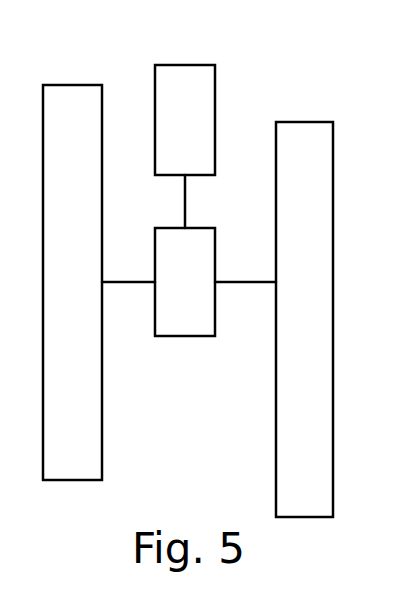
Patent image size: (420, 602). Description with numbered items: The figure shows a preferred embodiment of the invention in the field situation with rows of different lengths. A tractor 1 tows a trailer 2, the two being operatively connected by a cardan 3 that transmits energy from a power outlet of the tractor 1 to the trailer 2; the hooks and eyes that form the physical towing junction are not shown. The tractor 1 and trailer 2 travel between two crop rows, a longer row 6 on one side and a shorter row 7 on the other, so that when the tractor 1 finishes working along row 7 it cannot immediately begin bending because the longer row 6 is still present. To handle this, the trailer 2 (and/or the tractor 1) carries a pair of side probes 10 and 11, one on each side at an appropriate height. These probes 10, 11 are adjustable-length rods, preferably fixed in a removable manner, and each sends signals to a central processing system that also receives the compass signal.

The tractor 1 is at (198, 90).
The trailer 2 is at (183, 310).
The cardan 3 is at (184, 202).
The row 6 is at (65, 450).
The row 7 is at (297, 485).
The side probe 10 is at (132, 284).
The side probe 11 is at (243, 280).